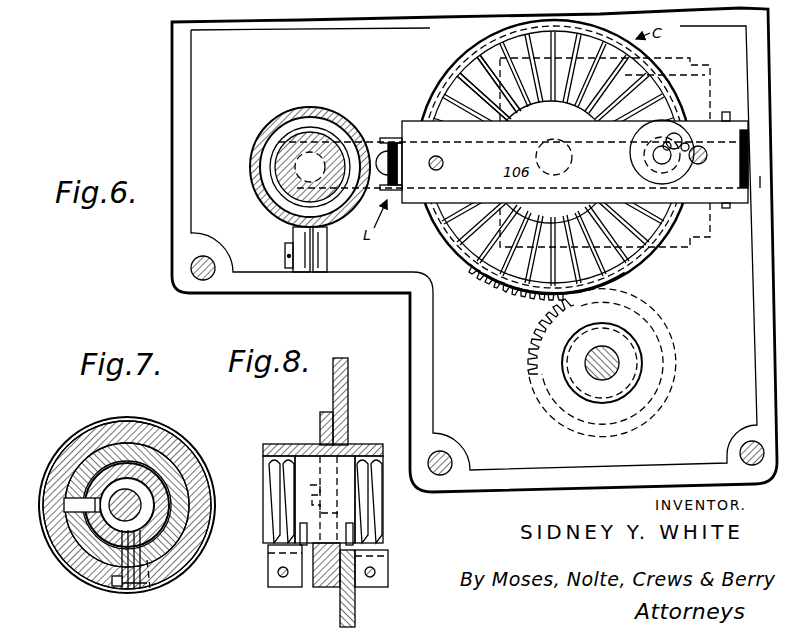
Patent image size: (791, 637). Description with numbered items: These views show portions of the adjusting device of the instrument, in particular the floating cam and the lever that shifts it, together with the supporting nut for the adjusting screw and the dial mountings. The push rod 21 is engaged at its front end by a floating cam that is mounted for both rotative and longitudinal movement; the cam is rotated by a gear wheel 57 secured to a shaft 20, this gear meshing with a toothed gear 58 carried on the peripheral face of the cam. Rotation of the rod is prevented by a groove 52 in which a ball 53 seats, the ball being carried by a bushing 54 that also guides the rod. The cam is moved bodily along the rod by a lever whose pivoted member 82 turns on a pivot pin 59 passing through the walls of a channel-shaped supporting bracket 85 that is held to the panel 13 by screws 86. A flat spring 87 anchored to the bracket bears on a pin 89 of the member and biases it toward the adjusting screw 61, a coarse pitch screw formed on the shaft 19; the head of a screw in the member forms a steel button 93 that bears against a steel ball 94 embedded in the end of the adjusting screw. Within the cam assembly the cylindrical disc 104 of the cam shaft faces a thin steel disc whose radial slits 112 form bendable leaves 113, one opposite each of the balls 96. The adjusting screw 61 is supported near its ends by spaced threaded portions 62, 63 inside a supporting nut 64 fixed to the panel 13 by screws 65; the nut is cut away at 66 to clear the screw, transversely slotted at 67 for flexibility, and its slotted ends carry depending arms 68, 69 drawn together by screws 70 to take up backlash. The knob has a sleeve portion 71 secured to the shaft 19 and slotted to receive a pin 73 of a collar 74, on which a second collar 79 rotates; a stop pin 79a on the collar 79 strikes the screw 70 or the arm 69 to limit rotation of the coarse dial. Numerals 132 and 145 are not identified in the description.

In FIG. 6, the wheel rim 132 is at (595, 40).
In FIG. 6, the radial slits 112 is at (468, 100).
In FIG. 6, the bendable leaves 113 is at (460, 107).
In FIG. 6, the cylindrical disc 104 is at (535, 110).
In FIG. 6, the toothed gear 58 is at (513, 296).
In FIG. 6, the pivoted member 82 is at (401, 204).
In FIG. 6, the pivot pin 59 is at (727, 112).
In FIG. 6, the frame wall 145 is at (760, 178).
In FIG. 6, the push rod 21 is at (574, 152).
In FIG. 6, the balls 96 is at (630, 160).
In FIG. 6, the groove 52 is at (672, 133).
In FIG. 6, the ball 53 is at (669, 142).
In FIG. 6, the bushing 54 is at (688, 146).
In FIG. 6, the screws 86 is at (702, 164).
In FIG. 6, the supporting bracket 85 is at (403, 132).
In FIG. 6, the steel button 93 is at (388, 140).
In FIG. 6, the pin 89 is at (397, 158).
In FIG. 6, the flat spring 87 is at (399, 168).
In FIG. 6, the supporting nut 64 is at (258, 150).
In FIG. 7, the supporting nut 64 is at (173, 583).
In FIG. 8, the supporting nut 64 is at (292, 445).
In FIG. 6, the steel ball 94 is at (292, 200).
In FIG. 6, the adjusting screw 61 is at (277, 170).
In FIG. 6, the arm 68 is at (303, 268).
In FIG. 7, the arm 68 is at (118, 593).
In FIG. 8, the arm 68 is at (268, 580).
In FIG. 6, the arm 69 is at (320, 267).
In FIG. 7, the arm 69 is at (137, 593).
In FIG. 6, the screws 70 is at (286, 257).
In FIG. 7, the screws 70 is at (100, 583).
In FIG. 8, the screws 70 is at (284, 578).
In FIG. 6, the gear wheel 57 is at (528, 352).
In FIG. 6, the shaft 20 is at (619, 362).
In FIG. 7, the collar 79 is at (58, 462).
In FIG. 7, the collar 74 is at (83, 460).
In FIG. 7, the sleeve portion 71 is at (148, 468).
In FIG. 7, the shaft 19 is at (117, 497).
In FIG. 7, the pin 73 is at (64, 505).
In FIG. 7, the stop pin 79a is at (157, 588).
In FIG. 8, the panel 13 is at (340, 400).
In FIG. 8, the cut away portion 66 is at (312, 450).
In FIG. 8, the threaded portion 62 is at (264, 470).
In FIG. 8, the threaded portion 63 is at (388, 463).
In FIG. 8, the screws 65 is at (327, 493).
In FIG. 8, the transverse slot 67 is at (305, 548).